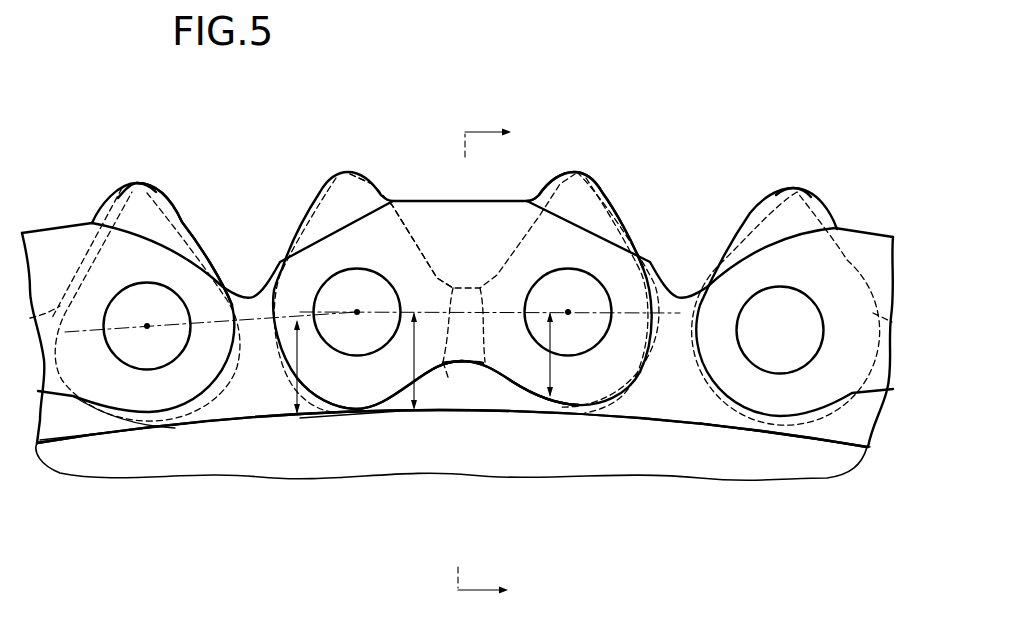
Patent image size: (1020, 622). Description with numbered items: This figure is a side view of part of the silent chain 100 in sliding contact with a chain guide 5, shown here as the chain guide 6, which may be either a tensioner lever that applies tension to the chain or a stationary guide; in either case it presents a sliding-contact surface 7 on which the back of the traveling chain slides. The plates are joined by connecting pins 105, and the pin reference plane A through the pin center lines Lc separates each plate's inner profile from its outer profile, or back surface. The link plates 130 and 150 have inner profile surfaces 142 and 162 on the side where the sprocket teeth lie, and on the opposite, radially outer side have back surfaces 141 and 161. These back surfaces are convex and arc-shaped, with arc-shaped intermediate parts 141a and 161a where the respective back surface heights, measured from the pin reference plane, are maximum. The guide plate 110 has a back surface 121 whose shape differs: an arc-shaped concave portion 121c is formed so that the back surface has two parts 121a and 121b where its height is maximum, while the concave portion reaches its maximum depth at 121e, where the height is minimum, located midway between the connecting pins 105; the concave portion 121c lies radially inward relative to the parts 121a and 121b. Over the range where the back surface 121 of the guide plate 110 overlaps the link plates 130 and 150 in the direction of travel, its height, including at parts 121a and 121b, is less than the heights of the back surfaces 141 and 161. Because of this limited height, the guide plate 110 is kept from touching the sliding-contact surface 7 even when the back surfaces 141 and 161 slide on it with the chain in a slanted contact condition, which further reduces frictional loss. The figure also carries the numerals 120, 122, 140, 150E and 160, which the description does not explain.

The silent chain 100 is at (808, 97).
The connecting pins 105 is at (383, 288).
The guide plate 110 is at (436, 190).
The first link plate 120 is at (462, 320).
The back surface of the guide plate 121 is at (536, 406).
The part of back surface where height is maximum 121a is at (362, 415).
The part of back surface where height is maximum 121b is at (567, 406).
The arc-shaped concave portion 121c is at (440, 378).
The maximum depth location of concave portion 121e is at (469, 365).
The tooth of first link plate 122 is at (511, 200).
The link plate 130 is at (664, 376).
The second link plate 140 is at (461, 357).
The back surface of link plate 141 is at (386, 420).
The arc-shaped intermediate part 141a is at (449, 378).
The inner profile surface 142 is at (410, 198).
The link plate 150 is at (496, 263).
The tooth tip edge 150E is at (152, 172).
The third link plate 160 is at (446, 345).
The back surface of link plate 161 is at (194, 432).
The arc-shaped intermediate part 161a is at (265, 422).
The inner profile surface 162 is at (184, 212).
The chain guide 5 is at (451, 473).
The chain guide 6 is at (830, 462).
The sliding-contact surface 7 is at (882, 433).